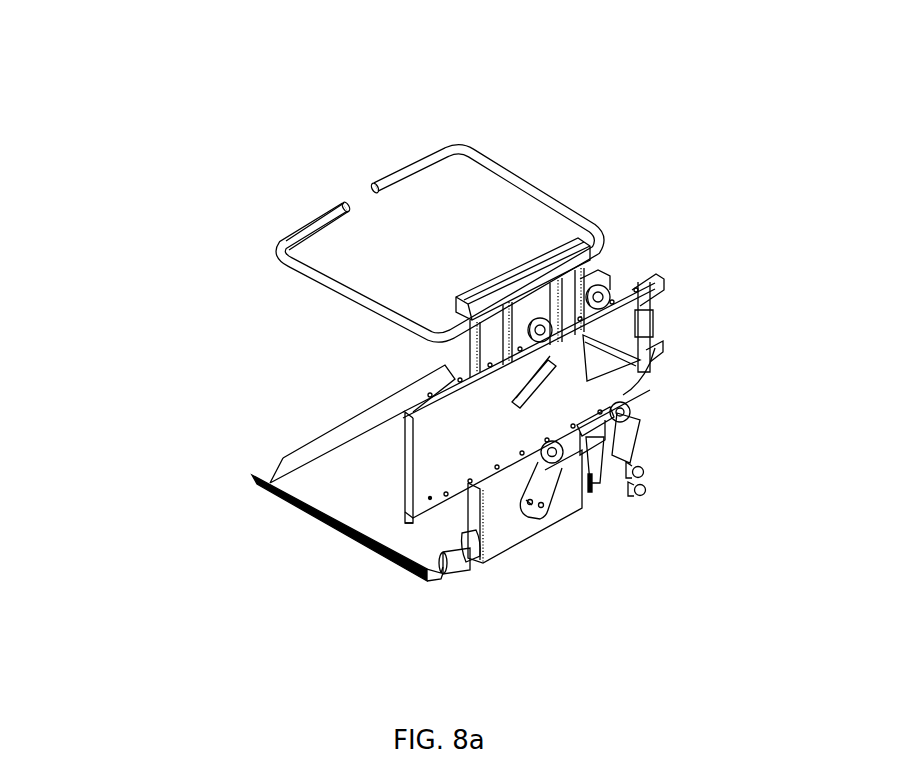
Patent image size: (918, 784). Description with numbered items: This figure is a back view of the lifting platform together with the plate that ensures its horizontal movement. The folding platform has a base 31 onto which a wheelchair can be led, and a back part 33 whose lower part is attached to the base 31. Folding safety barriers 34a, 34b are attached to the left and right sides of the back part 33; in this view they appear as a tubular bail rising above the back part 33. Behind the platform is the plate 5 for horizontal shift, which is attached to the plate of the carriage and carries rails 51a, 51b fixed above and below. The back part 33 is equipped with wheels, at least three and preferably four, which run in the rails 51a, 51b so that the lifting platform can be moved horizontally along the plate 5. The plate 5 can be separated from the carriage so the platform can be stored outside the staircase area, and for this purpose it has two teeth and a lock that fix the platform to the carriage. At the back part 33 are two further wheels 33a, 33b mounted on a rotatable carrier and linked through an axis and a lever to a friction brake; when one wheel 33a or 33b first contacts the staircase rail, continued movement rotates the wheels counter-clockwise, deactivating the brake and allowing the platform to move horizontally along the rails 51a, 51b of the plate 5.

The plate for horizontal shift 5 is at (405, 490).
The base 31 is at (335, 483).
The back part 33 is at (563, 237).
The wheel 33a is at (652, 476).
The wheel 33b is at (652, 497).
The folding safety barrier 34a is at (305, 215).
The folding safety barrier 34b is at (397, 162).
The rail 51a is at (395, 405).
The rail 51b is at (425, 528).